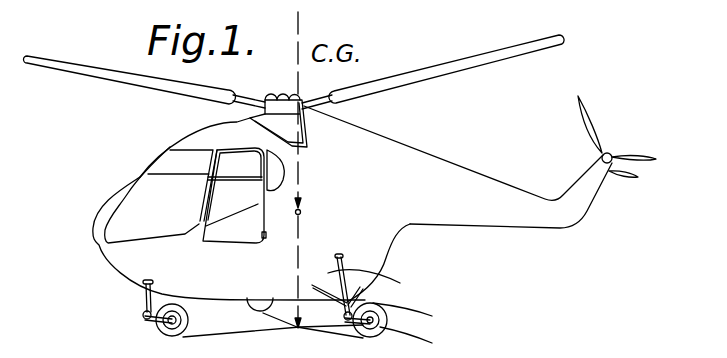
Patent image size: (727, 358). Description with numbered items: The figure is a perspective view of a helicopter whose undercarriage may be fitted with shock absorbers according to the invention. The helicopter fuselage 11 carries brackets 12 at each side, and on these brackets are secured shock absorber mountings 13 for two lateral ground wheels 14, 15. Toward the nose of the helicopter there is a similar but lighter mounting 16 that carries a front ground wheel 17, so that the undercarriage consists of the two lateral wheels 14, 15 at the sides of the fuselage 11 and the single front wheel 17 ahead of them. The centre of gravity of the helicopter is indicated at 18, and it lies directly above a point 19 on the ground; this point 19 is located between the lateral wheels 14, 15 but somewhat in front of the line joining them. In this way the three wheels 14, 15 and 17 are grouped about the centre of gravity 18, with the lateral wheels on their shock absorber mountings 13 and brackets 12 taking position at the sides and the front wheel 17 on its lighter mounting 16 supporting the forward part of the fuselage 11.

The helicopter fuselage 11 is at (392, 250).
The bracket 12 is at (379, 295).
The shock absorber mounting 13 is at (422, 312).
The lateral ground wheel 14 is at (424, 340).
The lateral ground wheel 15 is at (258, 311).
The front wheel mounting 16 is at (145, 300).
The front ground wheel 17 is at (157, 328).
The centre of gravity 18 is at (303, 210).
The ground point 19 is at (273, 335).